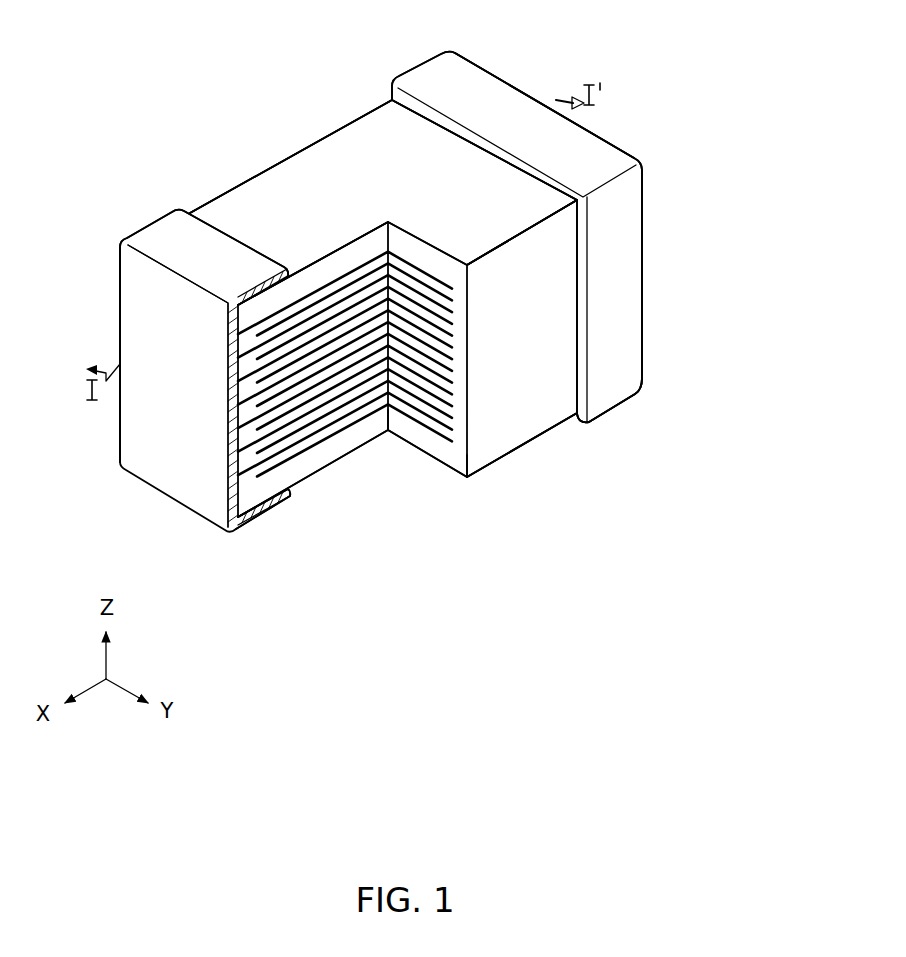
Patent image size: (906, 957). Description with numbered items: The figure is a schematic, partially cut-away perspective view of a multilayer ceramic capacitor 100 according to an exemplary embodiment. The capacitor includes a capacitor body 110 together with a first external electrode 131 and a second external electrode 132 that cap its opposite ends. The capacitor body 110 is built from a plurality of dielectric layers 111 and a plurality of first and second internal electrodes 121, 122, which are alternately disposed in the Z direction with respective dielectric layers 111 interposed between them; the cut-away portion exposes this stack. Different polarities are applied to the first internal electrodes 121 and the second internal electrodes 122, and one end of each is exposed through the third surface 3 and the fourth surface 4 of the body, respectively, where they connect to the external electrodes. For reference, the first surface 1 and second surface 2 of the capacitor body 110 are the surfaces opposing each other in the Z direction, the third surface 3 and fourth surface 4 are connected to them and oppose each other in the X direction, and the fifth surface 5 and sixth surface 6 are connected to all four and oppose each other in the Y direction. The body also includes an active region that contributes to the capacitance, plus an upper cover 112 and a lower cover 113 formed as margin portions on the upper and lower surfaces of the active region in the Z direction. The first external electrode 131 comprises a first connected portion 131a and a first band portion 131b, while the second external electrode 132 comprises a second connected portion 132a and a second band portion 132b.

The multilayer ceramic capacitor 100 is at (142, 106).
The capacitor body 110 is at (282, 176).
The dielectric layer 111 is at (313, 403).
The upper cover 112 is at (298, 290).
The lower cover 113 is at (452, 457).
The first internal electrode 121 is at (280, 432).
The second internal electrode 122 is at (352, 383).
The first external electrode 131 is at (257, 596).
The first connected portion 131a is at (190, 480).
The first band portion 131b is at (256, 505).
The second external electrode 132 is at (733, 457).
The second connected portion 132a is at (643, 372).
The second band portion 132b is at (622, 408).
The first surface 1 is at (505, 462).
The second surface 2 is at (330, 152).
The third surface 3 is at (155, 460).
The fourth surface 4 is at (507, 83).
The fifth surface 5 is at (548, 411).
The sixth surface 6 is at (366, 112).